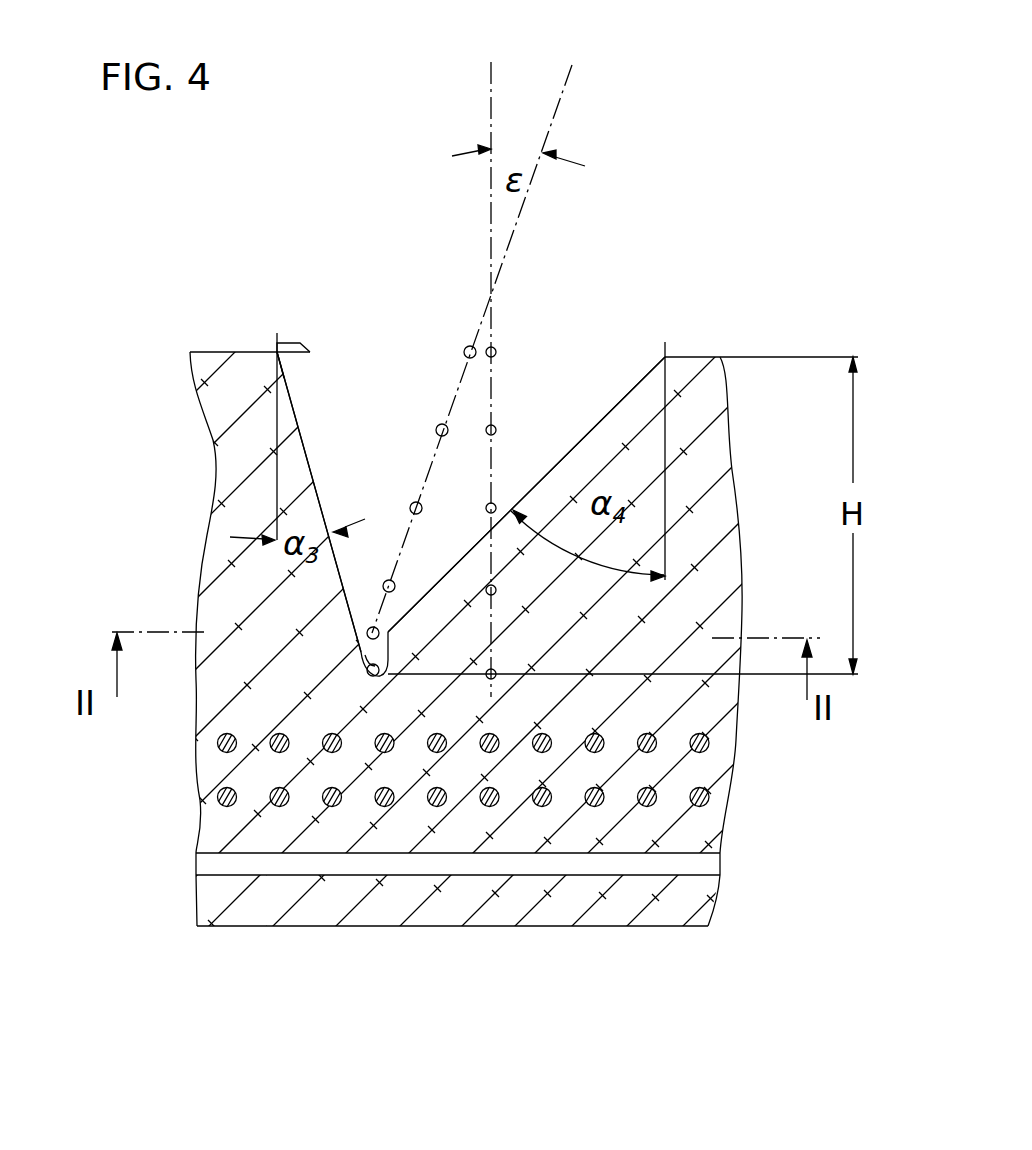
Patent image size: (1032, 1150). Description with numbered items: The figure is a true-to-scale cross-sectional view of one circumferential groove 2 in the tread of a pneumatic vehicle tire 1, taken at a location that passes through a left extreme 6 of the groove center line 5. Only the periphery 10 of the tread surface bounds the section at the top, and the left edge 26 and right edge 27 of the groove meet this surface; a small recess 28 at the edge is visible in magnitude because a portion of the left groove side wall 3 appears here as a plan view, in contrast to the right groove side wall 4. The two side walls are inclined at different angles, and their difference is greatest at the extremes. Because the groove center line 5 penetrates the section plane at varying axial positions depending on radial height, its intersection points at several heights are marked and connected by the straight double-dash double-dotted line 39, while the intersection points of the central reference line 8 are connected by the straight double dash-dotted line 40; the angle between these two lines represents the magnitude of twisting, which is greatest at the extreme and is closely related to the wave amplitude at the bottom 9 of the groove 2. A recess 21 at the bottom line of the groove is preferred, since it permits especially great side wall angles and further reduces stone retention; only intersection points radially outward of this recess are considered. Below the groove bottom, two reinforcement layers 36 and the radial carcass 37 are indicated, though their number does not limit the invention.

The pneumatic vehicle tire 1 is at (435, 915).
The circumferential groove 2 is at (522, 440).
The left groove side wall 3 is at (318, 468).
The right groove side wall 4 is at (560, 457).
The groove center line 5 is at (416, 508).
The left extreme 6 is at (277, 352).
The central reference line 8 is at (493, 348).
The bottom of the groove 9 is at (362, 662).
The periphery of the tire tread surface 10 is at (703, 357).
The recess 21 is at (365, 652).
The left edge 26 is at (293, 345).
The right edge 27 is at (667, 352).
The recess 28 is at (291, 345).
The reinforcement layer 36 is at (219, 793).
The radial carcass 37 is at (218, 857).
The double-dash double-dotted line 39 is at (567, 93).
The double dash-dotted line 40 is at (490, 107).